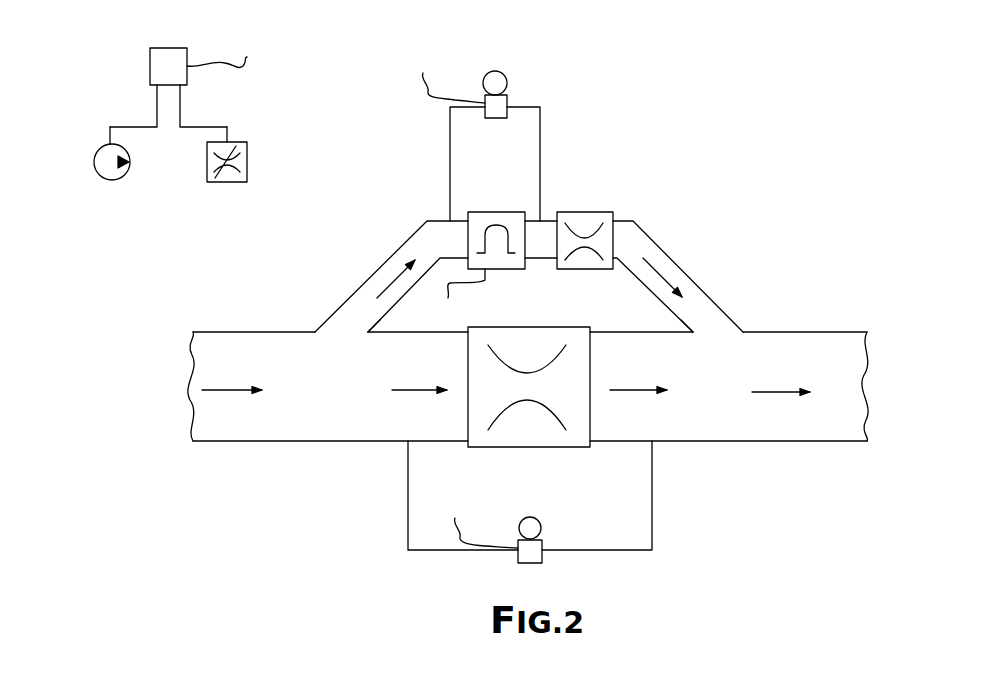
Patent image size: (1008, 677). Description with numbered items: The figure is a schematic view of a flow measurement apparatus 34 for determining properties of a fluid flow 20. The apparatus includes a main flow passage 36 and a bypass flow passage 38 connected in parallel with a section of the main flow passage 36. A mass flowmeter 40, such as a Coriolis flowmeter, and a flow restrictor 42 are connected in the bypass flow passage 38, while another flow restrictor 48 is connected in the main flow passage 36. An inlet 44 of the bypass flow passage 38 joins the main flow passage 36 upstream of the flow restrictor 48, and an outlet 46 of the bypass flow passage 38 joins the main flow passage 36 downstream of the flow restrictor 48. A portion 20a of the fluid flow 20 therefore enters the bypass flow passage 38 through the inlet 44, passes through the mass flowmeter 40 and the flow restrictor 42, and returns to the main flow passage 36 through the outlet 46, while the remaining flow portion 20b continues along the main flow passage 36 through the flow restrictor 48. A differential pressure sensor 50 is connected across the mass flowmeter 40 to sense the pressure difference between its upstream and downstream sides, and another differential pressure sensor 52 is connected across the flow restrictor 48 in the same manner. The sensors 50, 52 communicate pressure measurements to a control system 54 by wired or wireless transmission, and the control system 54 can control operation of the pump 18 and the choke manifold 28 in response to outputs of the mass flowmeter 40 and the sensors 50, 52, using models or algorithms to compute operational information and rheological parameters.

The pump 18 is at (97, 173).
The fluid flow 20 is at (227, 390).
The portion of the fluid flow 20a is at (383, 280).
The main fluid flow portion 20b is at (405, 392).
The choke manifold 28 is at (247, 160).
The flow measurement apparatus 34 is at (809, 167).
The main flow passage 36 is at (262, 442).
The bypass flow passage 38 is at (400, 233).
The mass flowmeter 40 is at (492, 212).
The flow restrictor 42 is at (587, 212).
The inlet 44 is at (342, 327).
The outlet 46 is at (710, 327).
The flow restrictor 48 is at (520, 447).
The differential pressure sensor 50 is at (506, 75).
The differential pressure sensor 52 is at (540, 522).
The control system 54 is at (157, 48).